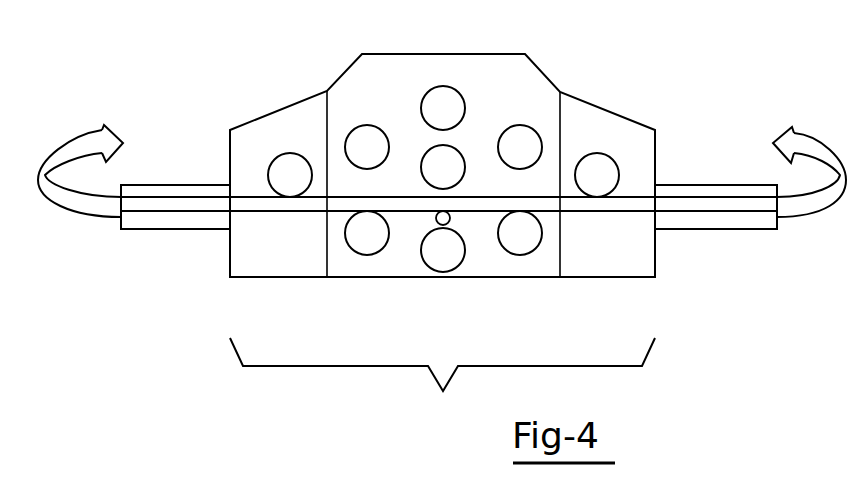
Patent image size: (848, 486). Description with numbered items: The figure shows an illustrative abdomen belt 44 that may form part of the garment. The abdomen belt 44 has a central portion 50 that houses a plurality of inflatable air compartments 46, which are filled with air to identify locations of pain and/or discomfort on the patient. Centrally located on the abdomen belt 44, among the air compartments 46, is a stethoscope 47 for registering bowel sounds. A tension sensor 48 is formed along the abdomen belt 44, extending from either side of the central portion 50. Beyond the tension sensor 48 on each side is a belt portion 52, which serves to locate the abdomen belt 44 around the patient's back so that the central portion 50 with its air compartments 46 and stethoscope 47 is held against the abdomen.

The abdomen belt 44 is at (650, 40).
The inflatable air compartments 46 is at (290, 160).
The stethoscope 47 is at (437, 218).
The tension sensor 48 is at (163, 207).
The central portion 50 is at (442, 382).
The belt portion 52 is at (65, 152).